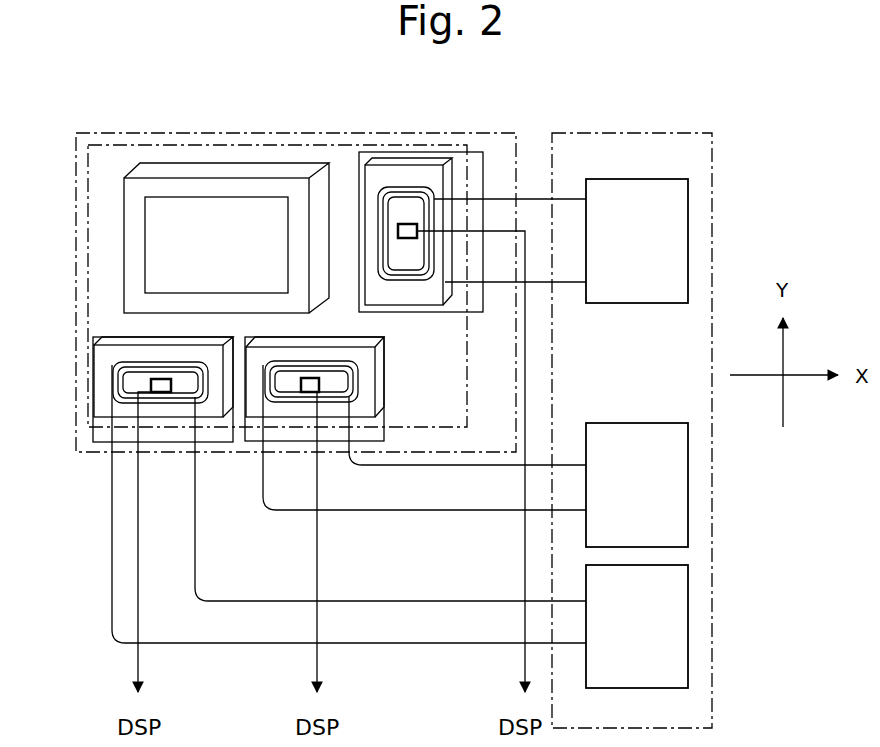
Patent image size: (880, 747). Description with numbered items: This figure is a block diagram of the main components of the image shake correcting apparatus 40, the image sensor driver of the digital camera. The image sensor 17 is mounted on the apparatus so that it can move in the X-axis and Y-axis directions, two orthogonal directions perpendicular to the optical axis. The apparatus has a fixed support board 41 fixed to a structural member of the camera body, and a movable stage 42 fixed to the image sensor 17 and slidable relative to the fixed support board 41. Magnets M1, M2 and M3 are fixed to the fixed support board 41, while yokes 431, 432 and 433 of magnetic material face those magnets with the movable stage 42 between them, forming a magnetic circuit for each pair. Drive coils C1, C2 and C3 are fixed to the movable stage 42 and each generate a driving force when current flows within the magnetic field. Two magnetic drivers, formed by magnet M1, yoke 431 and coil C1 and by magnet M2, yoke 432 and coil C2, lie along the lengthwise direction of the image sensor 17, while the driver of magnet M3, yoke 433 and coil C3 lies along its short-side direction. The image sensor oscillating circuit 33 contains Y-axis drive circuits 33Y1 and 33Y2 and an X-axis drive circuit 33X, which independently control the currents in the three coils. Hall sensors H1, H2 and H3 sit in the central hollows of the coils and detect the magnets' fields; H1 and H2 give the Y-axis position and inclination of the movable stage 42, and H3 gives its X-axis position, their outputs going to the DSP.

The image shake correcting apparatus 40 is at (336, 118).
The movable stage 42 is at (95, 133).
The fixed support board 41 is at (166, 145).
The image sensor 17 is at (230, 192).
The yoke 433 is at (475, 177).
The magnet M3 is at (402, 160).
The drive coil C3 is at (418, 185).
The Hall sensor H3 is at (410, 238).
The yoke 431 is at (102, 433).
The magnet M1 is at (112, 342).
The drive coil C1 is at (113, 380).
The Hall sensor H1 is at (163, 389).
The yoke 432 is at (335, 435).
The magnet M2 is at (378, 367).
The drive coil C2 is at (360, 389).
The Hall sensor H2 is at (306, 392).
The image sensor oscillating circuit 33 is at (622, 133).
The X-axis drive circuit 33X is at (688, 233).
The Y-axis drive circuit 33Y2 is at (688, 488).
The Y-axis drive circuit 33Y1 is at (688, 627).